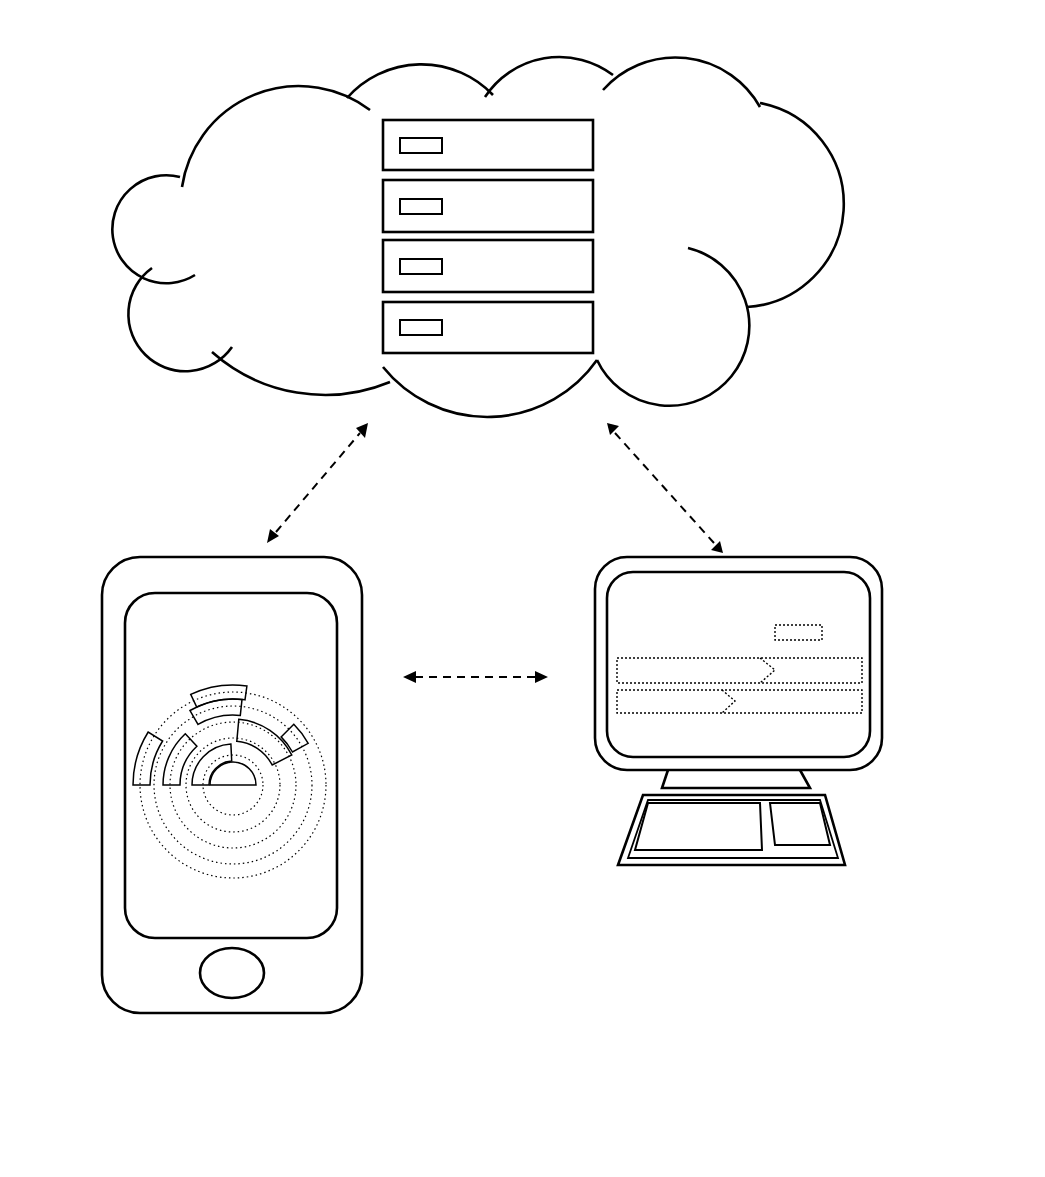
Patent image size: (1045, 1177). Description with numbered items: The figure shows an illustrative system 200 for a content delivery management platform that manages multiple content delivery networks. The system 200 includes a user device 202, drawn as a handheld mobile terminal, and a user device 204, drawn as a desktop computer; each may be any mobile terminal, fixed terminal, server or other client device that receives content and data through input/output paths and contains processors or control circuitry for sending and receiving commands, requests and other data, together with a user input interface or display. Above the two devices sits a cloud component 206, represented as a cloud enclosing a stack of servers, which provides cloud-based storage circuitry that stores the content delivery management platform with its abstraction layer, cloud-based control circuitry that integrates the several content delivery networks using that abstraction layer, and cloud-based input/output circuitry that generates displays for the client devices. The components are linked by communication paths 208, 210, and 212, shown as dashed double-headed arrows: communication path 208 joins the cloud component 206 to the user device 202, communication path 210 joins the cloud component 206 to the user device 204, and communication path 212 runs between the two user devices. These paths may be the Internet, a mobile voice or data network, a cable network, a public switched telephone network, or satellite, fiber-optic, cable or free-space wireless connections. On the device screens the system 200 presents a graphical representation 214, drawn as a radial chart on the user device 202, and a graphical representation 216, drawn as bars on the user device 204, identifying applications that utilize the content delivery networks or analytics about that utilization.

The system 200 is at (481, 36).
The user device 202 is at (155, 548).
The user device 204 is at (762, 553).
The cloud component 206 is at (782, 170).
The communication path 208 is at (290, 457).
The communication path 210 is at (677, 440).
The communication path 212 is at (458, 658).
The graphical representation 214 is at (167, 668).
The graphical representation 216 is at (842, 653).